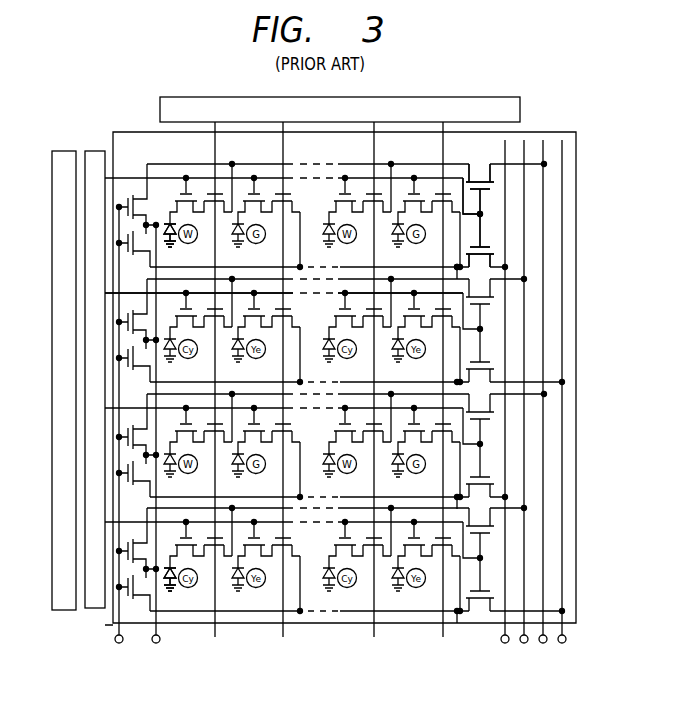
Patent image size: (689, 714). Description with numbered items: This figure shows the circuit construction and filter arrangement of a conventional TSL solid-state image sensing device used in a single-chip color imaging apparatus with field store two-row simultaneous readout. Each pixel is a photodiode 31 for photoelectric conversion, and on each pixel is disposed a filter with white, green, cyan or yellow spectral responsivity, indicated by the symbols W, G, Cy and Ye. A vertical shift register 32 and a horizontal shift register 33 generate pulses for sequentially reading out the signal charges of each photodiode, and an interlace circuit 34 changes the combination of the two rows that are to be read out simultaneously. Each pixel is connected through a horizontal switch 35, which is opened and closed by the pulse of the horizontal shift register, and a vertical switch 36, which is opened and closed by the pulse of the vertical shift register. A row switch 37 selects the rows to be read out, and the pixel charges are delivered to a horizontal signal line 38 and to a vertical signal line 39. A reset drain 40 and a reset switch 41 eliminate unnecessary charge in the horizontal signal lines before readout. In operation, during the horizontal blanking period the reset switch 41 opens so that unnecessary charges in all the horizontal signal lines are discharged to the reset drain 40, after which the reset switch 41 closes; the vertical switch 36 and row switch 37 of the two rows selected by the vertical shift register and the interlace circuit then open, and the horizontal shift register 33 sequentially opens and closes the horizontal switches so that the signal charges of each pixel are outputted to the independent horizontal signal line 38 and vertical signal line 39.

The photodiode 31 is at (178, 244).
The vertical shift register 32 is at (52, 412).
The horizontal shift register 33 is at (520, 110).
The interlace circuit 34 is at (96, 610).
The horizontal switch 35 is at (286, 205).
The vertical switch 36 is at (182, 193).
The row switch 37 is at (492, 247).
The horizontal signal line 38 is at (402, 283).
The vertical signal line 39 is at (558, 355).
The reset drain 40 is at (156, 631).
The reset switch 41 is at (146, 250).